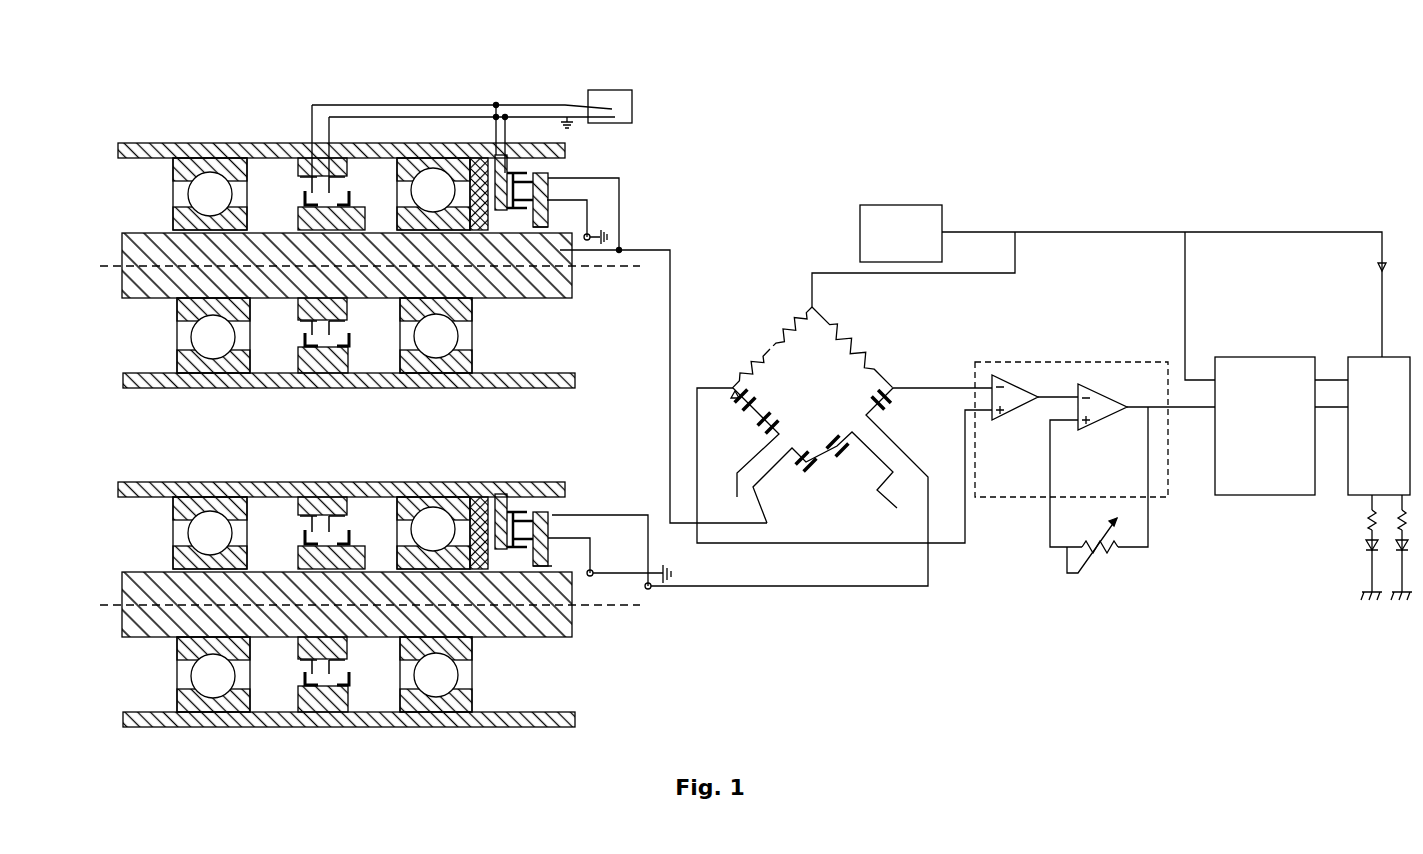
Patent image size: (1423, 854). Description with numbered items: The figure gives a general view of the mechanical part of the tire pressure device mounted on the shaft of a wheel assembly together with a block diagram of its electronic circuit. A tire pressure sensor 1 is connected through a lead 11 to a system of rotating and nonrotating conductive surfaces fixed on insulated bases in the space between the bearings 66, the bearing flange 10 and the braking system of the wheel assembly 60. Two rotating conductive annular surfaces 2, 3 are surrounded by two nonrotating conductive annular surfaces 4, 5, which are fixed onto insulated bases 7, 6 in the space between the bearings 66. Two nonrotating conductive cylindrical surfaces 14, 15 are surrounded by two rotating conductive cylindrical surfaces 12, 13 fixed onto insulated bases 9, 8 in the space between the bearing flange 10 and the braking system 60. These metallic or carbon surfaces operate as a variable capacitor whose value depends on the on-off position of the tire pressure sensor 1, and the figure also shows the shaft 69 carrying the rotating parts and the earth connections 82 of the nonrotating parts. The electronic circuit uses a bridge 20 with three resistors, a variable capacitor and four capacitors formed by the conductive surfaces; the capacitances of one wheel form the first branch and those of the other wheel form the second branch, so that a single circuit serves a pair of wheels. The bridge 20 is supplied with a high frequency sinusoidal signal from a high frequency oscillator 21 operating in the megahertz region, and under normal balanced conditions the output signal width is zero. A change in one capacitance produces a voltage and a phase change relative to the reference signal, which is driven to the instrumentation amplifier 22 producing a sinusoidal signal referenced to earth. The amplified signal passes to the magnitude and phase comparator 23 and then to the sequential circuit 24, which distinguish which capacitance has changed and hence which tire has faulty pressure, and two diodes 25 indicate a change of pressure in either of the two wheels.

The tire pressure sensor 1 is at (610, 91).
The rotating conductive annular surface 2 is at (342, 192).
The rotating conductive annular surface 3 is at (301, 188).
The nonrotating conductive annular surface 4 is at (350, 206).
The nonrotating conductive annular surface 5 is at (180, 373).
The insulated base 6 is at (174, 230).
The insulated base 7 is at (312, 178).
The insulated base 8 is at (497, 157).
The insulated base 9 is at (549, 202).
The bearing flange 10 is at (477, 153).
The lead wire 11 is at (565, 103).
The rotating conductive cylindrical surface 12 is at (518, 173).
The rotating conductive cylindrical surface 13 is at (527, 214).
The nonrotating conductive cylindrical surface 14 is at (532, 178).
The nonrotating conductive cylindrical surface 15 is at (549, 228).
The bridge 20 is at (790, 330).
The high frequency oscillator 21 is at (885, 205).
The amplifier 22 is at (1067, 360).
The magnitude and phase comparator 23 is at (1262, 357).
The sequential circuit 24 is at (1348, 492).
The diodes 25 is at (1370, 545).
The braking system of the wheel assembly 60 is at (540, 383).
The bearings 66 is at (323, 162).
The shaft 69 is at (130, 296).
The ground 82 is at (613, 237).